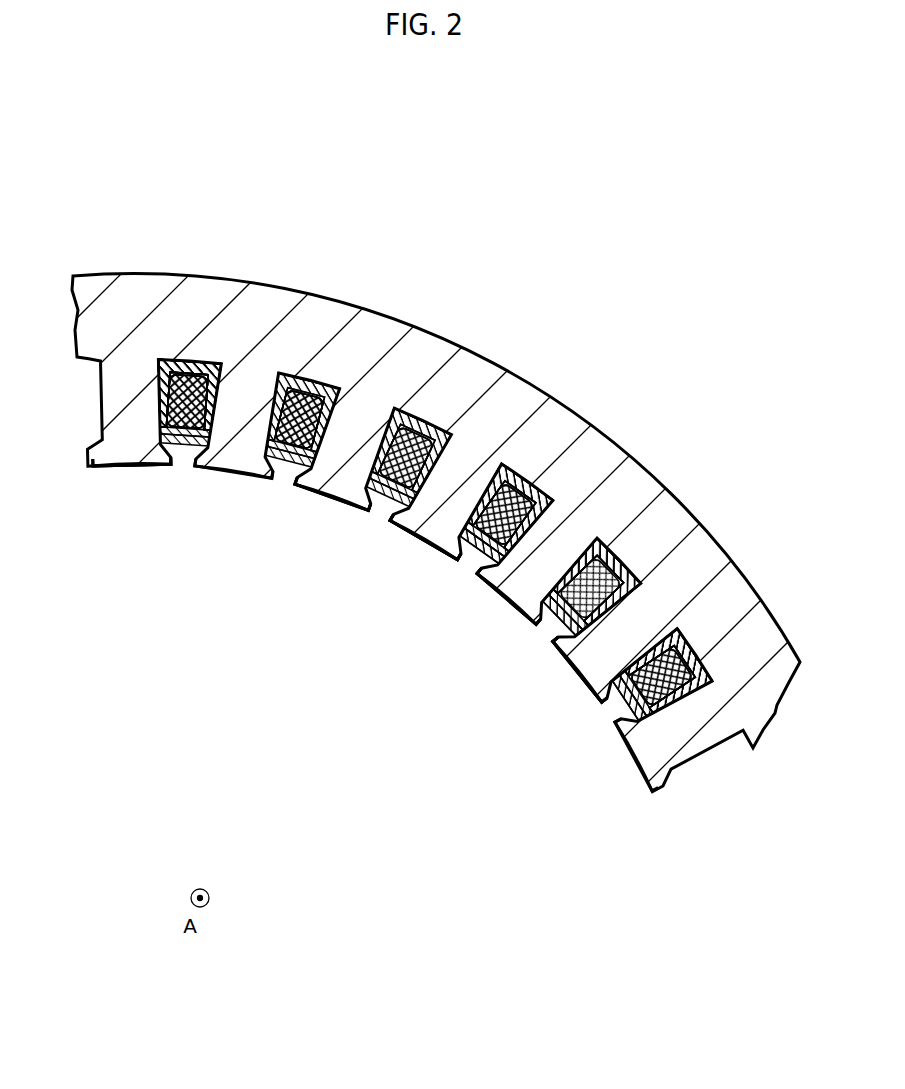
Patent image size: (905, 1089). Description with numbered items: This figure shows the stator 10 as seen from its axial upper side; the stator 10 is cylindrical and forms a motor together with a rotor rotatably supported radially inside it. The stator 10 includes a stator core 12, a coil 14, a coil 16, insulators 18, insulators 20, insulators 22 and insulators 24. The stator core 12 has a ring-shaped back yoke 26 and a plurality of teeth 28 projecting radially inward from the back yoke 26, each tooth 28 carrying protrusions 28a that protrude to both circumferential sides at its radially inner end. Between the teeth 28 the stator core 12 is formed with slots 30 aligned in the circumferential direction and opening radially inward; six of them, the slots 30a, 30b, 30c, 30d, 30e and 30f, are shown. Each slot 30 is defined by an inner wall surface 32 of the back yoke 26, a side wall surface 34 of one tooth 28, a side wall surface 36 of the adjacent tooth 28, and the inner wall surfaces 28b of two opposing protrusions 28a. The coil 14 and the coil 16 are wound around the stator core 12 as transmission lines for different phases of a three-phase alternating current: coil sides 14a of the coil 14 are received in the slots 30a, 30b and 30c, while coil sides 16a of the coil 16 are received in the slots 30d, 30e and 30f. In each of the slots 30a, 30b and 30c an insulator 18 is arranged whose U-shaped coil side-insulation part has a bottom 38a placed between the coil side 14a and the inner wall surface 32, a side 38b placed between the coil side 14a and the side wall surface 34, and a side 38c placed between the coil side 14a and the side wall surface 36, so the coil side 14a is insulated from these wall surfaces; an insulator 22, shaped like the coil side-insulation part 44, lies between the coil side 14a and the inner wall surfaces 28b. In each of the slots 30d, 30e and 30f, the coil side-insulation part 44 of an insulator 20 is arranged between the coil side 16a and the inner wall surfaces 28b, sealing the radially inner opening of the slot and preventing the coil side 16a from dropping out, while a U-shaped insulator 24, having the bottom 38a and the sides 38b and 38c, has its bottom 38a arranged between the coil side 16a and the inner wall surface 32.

The stator 10 is at (452, 468).
The stator core 12 is at (503, 354).
The coil 14 is at (223, 348).
The coil side 14a is at (156, 388).
The coil 16 is at (622, 465).
The coil side 16a is at (512, 478).
The insulator 18 is at (193, 358).
The insulator 20 is at (450, 552).
The insulator 22 is at (183, 444).
The insulator 24 is at (530, 493).
The back yoke 26 is at (605, 530).
The tooth 28 is at (127, 443).
The protrusion 28a is at (93, 468).
The inner wall surface 28b is at (157, 440).
The slot 30 is at (205, 380).
The slot 30a is at (192, 405).
The slot 30b is at (300, 425).
The slot 30c is at (403, 470).
The slot 30d is at (508, 530).
The slot 30e is at (592, 602).
The slot 30f is at (676, 712).
The inner wall surface 32 is at (165, 372).
The side wall surface 34 is at (153, 412).
The side wall surface 36 is at (212, 444).
The bottom 38a is at (172, 372).
The side 38b is at (160, 365).
The side 38c is at (218, 447).
The coil side-insulation part 44 is at (470, 553).